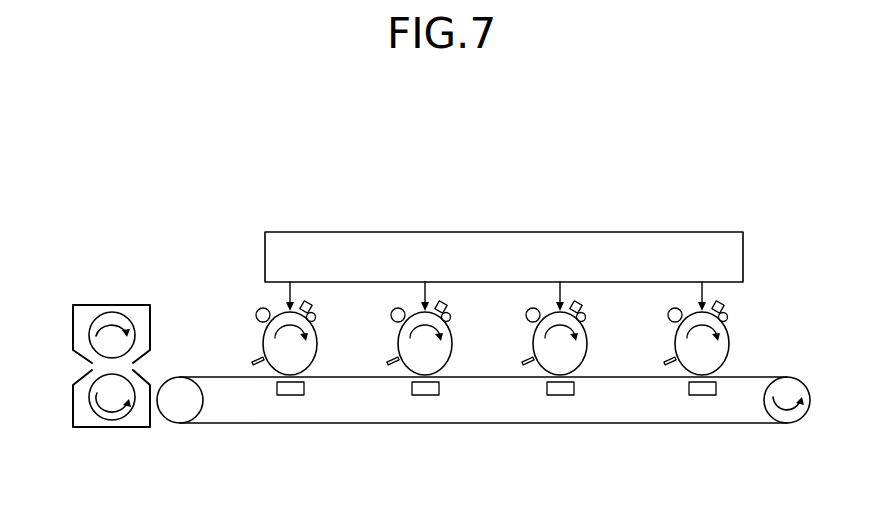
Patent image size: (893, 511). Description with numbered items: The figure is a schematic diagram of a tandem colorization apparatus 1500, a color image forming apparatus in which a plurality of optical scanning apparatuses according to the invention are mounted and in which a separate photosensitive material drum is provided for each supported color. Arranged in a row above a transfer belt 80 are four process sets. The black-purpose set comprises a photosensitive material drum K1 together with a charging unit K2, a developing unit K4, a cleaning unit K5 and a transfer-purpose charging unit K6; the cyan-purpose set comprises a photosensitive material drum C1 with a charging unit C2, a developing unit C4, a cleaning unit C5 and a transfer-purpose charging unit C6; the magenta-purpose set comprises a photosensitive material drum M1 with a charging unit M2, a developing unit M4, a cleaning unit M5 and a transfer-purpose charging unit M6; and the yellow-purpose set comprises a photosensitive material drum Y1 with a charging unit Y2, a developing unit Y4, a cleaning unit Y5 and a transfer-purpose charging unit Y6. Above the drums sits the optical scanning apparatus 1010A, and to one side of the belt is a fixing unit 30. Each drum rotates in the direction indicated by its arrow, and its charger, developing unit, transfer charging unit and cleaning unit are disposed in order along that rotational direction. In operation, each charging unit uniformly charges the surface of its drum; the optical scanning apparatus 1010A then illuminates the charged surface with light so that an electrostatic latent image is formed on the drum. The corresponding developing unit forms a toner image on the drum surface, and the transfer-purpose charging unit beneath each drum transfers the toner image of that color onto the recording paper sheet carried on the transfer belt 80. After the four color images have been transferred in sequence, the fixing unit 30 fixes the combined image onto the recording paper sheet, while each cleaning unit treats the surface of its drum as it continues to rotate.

The tandem colorization apparatus 1500 is at (460, 176).
The optical scanning apparatus 1010A is at (504, 230).
The fixing unit 30 is at (120, 345).
The transfer belt 80 is at (483, 424).
The photosensitive material drum K1 is at (314, 343).
The charging unit K2 is at (237, 307).
The developing unit K4 is at (331, 303).
The cleaning unit K5 is at (234, 349).
The transfer-purpose charging unit K6 is at (317, 395).
The photosensitive material drum C1 is at (450, 343).
The charging unit C2 is at (367, 316).
The developing unit C4 is at (467, 303).
The cleaning unit C5 is at (368, 346).
The transfer-purpose charging unit C6 is at (453, 395).
The photosensitive material drum M1 is at (588, 343).
The charging unit M2 is at (504, 316).
The developing unit M4 is at (602, 303).
The cleaning unit M5 is at (504, 346).
The transfer-purpose charging unit M6 is at (589, 396).
The photosensitive material drum Y1 is at (726, 343).
The charging unit Y2 is at (648, 317).
The developing unit Y4 is at (744, 307).
The cleaning unit Y5 is at (646, 347).
The transfer-purpose charging unit Y6 is at (722, 401).